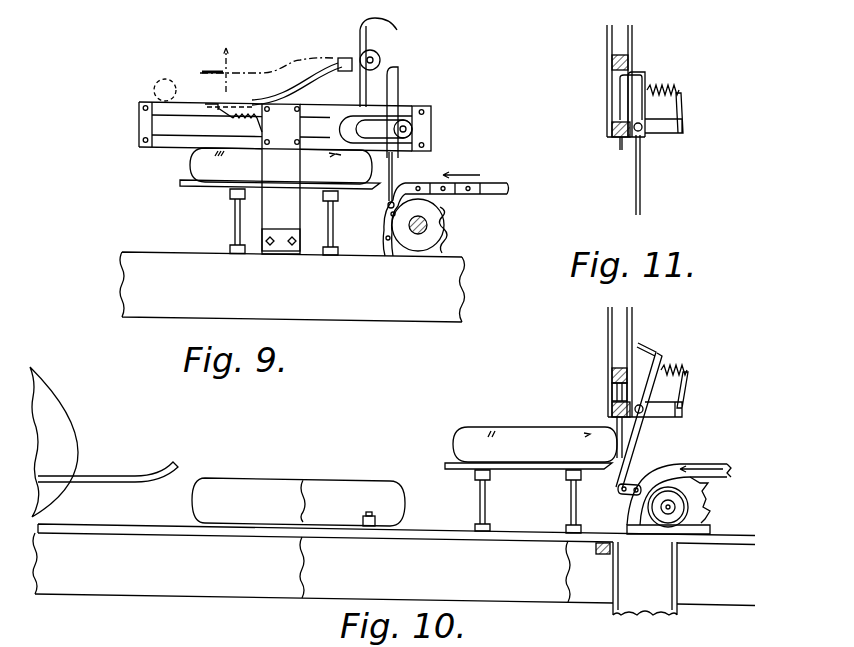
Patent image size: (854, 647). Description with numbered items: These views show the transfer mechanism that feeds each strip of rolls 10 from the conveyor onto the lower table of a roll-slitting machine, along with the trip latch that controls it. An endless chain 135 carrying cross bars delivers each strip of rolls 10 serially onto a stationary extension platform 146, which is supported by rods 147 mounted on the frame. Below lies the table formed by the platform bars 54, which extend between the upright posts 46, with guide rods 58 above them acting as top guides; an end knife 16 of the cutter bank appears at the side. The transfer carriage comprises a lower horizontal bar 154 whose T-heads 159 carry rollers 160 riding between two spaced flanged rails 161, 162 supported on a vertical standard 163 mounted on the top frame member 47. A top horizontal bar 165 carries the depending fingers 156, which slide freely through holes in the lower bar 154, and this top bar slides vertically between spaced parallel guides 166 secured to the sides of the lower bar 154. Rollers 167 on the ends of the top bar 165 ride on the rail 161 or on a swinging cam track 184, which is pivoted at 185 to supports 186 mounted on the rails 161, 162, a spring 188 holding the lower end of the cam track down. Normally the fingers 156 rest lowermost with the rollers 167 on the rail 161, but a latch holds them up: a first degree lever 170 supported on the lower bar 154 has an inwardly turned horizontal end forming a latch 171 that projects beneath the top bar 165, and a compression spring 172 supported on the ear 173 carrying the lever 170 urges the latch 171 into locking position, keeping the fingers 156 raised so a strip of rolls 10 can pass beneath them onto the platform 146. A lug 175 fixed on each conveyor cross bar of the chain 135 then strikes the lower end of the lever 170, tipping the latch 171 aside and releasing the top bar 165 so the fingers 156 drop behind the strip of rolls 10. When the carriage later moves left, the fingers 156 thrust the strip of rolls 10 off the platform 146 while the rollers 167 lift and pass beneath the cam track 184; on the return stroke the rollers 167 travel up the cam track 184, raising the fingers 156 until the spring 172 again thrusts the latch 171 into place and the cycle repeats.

In FIG. 9, the strip of rolls 10 is at (200, 169).
In FIG. 10, the strip of rolls 10 is at (497, 430).
In FIG. 10, the end knife 16 is at (60, 420).
In FIG. 10, the upright post 46 is at (628, 612).
In FIG. 9, the top frame member 47 is at (220, 306).
In FIG. 10, the top frame member 47 is at (146, 590).
In FIG. 10, the platform bars 54 is at (104, 533).
In FIG. 10, the guide rods 58 is at (127, 475).
In FIG. 10, the endless chain 135 is at (700, 464).
In FIG. 9, the extension platform 146 is at (215, 187).
In FIG. 10, the extension platform 146 is at (502, 470).
In FIG. 10, the rods 147 is at (488, 508).
In FIG. 11, the lower horizontal bar 154 is at (617, 137).
In FIG. 10, the lower horizontal bar 154 is at (612, 408).
In FIG. 9, the fingers 156 is at (391, 180).
In FIG. 11, the fingers 156 is at (630, 107).
In FIG. 10, the fingers 156 is at (630, 452).
In FIG. 9, the T-heads 159 is at (384, 129).
In FIG. 9, the rollers 160 is at (412, 129).
In FIG. 9, the flanged rail 161 is at (430, 112).
In FIG. 9, the flanged rail 162 is at (428, 151).
In FIG. 9, the vertical standard 163 is at (280, 189).
In FIG. 11, the top horizontal bar 165 is at (612, 62).
In FIG. 10, the top horizontal bar 165 is at (612, 375).
In FIG. 9, the guides 166 is at (397, 30).
In FIG. 11, the guides 166 is at (614, 24).
In FIG. 10, the guides 166 is at (608, 330).
In FIG. 9, the rollers 167 is at (381, 63).
In FIG. 9, the lever 170 is at (399, 78).
In FIG. 11, the lever 170 is at (640, 72).
In FIG. 10, the lever 170 is at (665, 362).
In FIG. 11, the latch 171 is at (628, 76).
In FIG. 10, the latch 171 is at (647, 342).
In FIG. 11, the compression spring 172 is at (666, 90).
In FIG. 10, the compression spring 172 is at (674, 370).
In FIG. 11, the ear 173 is at (660, 130).
In FIG. 10, the ear 173 is at (660, 410).
In FIG. 9, the lug 175 is at (408, 182).
In FIG. 10, the lug 175 is at (620, 493).
In FIG. 9, the cam track 184 is at (293, 68).
In FIG. 9, the pivot 185 is at (340, 72).
In FIG. 9, the supports 186 is at (348, 58).
In FIG. 9, the spring 188 is at (240, 125).